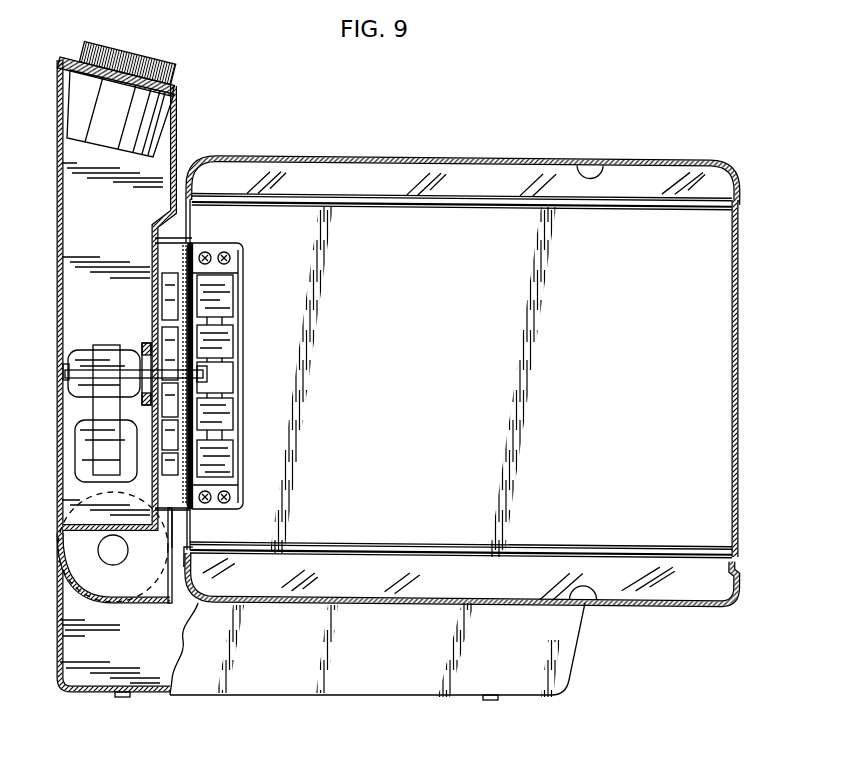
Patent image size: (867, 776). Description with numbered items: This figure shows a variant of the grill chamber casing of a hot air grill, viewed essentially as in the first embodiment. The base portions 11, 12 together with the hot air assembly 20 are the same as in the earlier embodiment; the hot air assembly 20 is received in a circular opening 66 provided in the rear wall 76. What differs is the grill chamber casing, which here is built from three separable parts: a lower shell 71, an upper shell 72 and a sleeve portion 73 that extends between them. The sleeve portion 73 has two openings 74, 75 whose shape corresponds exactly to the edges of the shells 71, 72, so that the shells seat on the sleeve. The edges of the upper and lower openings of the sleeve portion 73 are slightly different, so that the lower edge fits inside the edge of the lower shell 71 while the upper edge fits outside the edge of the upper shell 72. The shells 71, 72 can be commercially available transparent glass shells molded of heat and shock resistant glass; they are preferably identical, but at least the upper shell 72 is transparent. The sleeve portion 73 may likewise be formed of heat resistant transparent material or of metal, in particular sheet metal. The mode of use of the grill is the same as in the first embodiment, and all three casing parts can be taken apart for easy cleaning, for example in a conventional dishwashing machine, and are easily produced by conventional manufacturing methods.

The base portion 11 is at (77, 283).
The base portion 12 is at (303, 700).
The hot air assembly 20 is at (243, 353).
The circular opening 66 is at (190, 520).
The lower shell 71 is at (703, 600).
The upper shell 72 is at (534, 160).
The sleeve portion 73 is at (438, 247).
The opening 74 is at (708, 213).
The opening 75 is at (693, 562).
The rear wall 76 is at (190, 533).